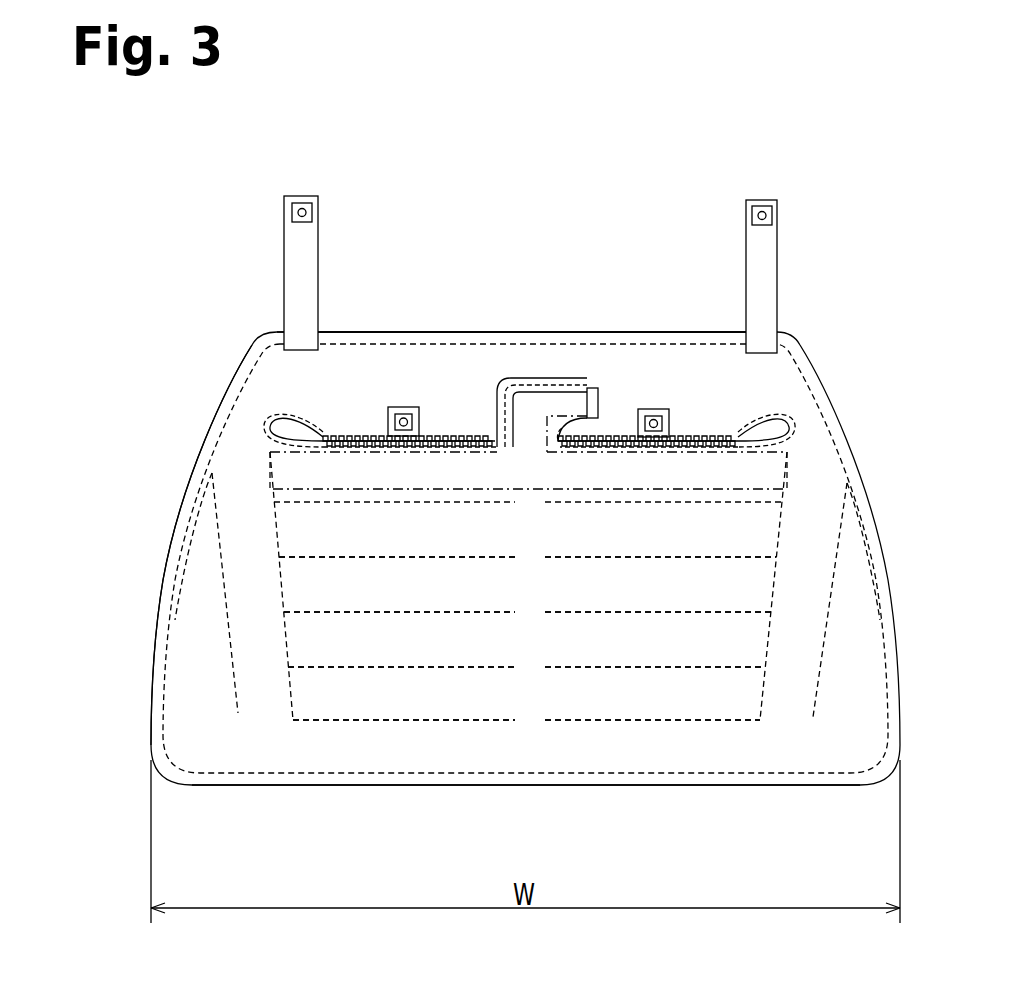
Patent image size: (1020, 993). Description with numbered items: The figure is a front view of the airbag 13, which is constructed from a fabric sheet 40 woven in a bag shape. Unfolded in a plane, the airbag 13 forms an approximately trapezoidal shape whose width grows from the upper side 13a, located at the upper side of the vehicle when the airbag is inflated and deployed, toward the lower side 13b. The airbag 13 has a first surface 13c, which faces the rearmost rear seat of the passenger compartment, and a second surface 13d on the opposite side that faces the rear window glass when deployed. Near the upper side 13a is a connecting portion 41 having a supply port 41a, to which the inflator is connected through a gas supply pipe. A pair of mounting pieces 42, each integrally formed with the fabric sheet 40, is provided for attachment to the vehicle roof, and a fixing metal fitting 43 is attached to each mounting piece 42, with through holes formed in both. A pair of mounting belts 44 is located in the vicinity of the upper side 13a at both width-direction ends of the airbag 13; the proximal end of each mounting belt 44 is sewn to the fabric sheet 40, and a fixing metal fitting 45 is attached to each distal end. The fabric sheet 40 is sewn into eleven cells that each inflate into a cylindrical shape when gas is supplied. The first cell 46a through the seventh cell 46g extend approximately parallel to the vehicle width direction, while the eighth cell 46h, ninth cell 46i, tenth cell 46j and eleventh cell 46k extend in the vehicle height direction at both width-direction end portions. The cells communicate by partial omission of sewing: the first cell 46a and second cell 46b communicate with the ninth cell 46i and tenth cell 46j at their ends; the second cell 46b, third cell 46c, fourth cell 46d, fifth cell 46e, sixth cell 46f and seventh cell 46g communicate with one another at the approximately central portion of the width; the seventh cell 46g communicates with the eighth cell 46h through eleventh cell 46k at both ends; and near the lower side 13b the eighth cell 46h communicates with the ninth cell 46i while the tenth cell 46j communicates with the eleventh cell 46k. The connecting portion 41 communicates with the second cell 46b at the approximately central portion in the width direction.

The airbag 13 is at (903, 284).
The upper side 13a is at (395, 332).
The lower side 13b is at (707, 790).
The first surface 13c is at (248, 423).
The second surface 13d is at (188, 545).
The fabric sheet 40 is at (827, 392).
The connecting portion 41 is at (506, 378).
The supply port 41a is at (590, 388).
The mounting piece 42 is at (403, 407).
The fixing metal fitting 43 is at (419, 422).
The mounting belt 44 is at (284, 260).
The fixing metal fitting 45 is at (312, 212).
The first cell 46a is at (352, 400).
The second cell 46b is at (778, 473).
The third cell 46c is at (660, 543).
The fourth cell 46d is at (660, 598).
The fifth cell 46e is at (660, 654).
The sixth cell 46f is at (660, 709).
The seventh cell 46g is at (660, 765).
The eighth cell 46h is at (228, 711).
The ninth cell 46i is at (245, 537).
The tenth cell 46j is at (808, 573).
The eleventh cell 46k is at (880, 713).